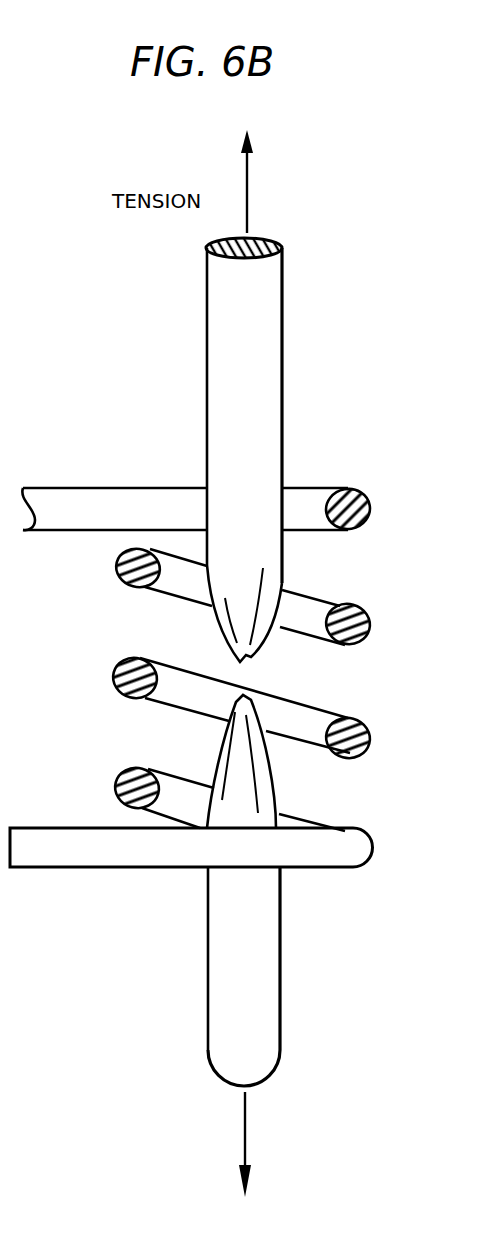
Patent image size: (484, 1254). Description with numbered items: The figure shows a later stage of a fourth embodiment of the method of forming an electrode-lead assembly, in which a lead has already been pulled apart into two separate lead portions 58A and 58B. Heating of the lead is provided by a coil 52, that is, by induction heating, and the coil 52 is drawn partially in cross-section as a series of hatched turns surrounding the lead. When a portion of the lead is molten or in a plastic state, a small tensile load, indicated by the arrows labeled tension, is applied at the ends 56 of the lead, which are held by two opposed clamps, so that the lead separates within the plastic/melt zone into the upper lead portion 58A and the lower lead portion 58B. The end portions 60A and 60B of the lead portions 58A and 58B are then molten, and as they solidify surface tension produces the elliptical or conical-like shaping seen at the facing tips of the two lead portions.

The coil 52 is at (355, 868).
The ends 56 is at (273, 238).
The lead portion 58A is at (207, 323).
The lead portion 58B is at (208, 974).
The end portion 60A is at (283, 612).
The end portion 60B is at (266, 712).